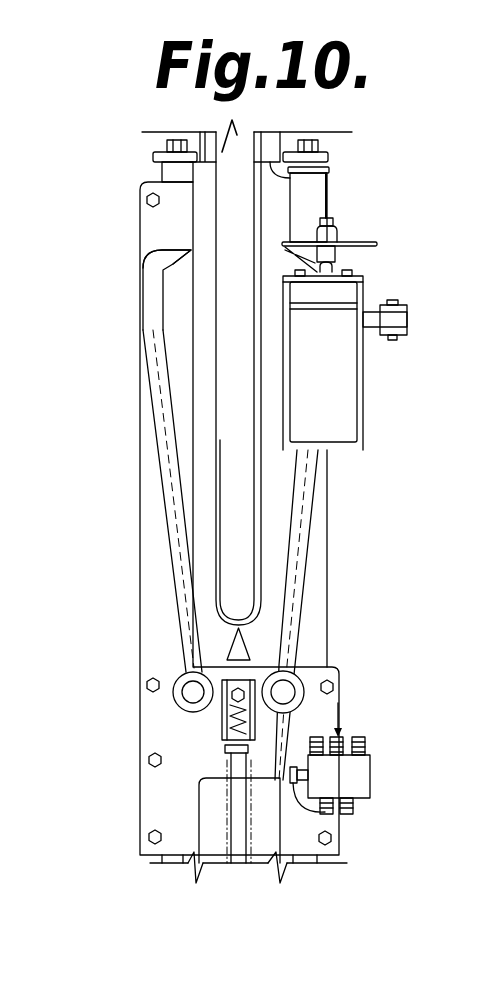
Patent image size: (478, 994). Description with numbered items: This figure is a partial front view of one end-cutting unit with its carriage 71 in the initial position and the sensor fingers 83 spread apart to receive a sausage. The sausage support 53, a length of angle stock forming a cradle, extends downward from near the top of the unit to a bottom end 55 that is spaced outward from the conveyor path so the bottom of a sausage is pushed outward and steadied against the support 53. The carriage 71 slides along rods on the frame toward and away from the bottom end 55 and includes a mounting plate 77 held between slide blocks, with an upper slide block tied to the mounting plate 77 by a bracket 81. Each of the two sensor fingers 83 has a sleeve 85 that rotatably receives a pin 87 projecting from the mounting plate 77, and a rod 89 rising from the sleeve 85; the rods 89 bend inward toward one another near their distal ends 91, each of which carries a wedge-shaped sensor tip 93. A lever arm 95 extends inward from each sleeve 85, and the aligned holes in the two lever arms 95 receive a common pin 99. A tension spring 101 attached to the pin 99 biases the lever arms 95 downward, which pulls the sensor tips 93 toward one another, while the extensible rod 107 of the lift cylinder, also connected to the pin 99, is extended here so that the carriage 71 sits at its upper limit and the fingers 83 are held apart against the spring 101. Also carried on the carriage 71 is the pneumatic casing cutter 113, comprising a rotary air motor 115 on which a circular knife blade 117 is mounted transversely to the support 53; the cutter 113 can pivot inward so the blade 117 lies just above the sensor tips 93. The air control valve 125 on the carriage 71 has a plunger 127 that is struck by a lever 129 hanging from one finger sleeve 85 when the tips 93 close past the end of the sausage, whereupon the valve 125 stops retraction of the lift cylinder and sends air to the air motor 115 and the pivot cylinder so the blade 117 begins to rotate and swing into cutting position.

The sausage support 53 is at (272, 131).
The bottom end 55 is at (300, 178).
The carriage 71 is at (140, 386).
The mounting plate 77 is at (338, 703).
The bracket 81 is at (152, 784).
The sensor fingers 83 is at (155, 457).
The sleeve 85 is at (322, 667).
The pin 87 is at (178, 665).
The rod 89 is at (168, 540).
The distal end 91 is at (165, 262).
The sensor tip 93 is at (180, 258).
The lever arm 95 is at (260, 668).
The pin 99 is at (232, 696).
The tension spring 101 is at (232, 730).
The extensible rod 107 is at (232, 818).
The casing cutter 113 is at (384, 268).
The rotary air motor 115 is at (357, 380).
The circular knife blade 117 is at (352, 243).
The air control valve 125 is at (370, 775).
The plunger 127 is at (345, 812).
The lever 129 is at (305, 706).